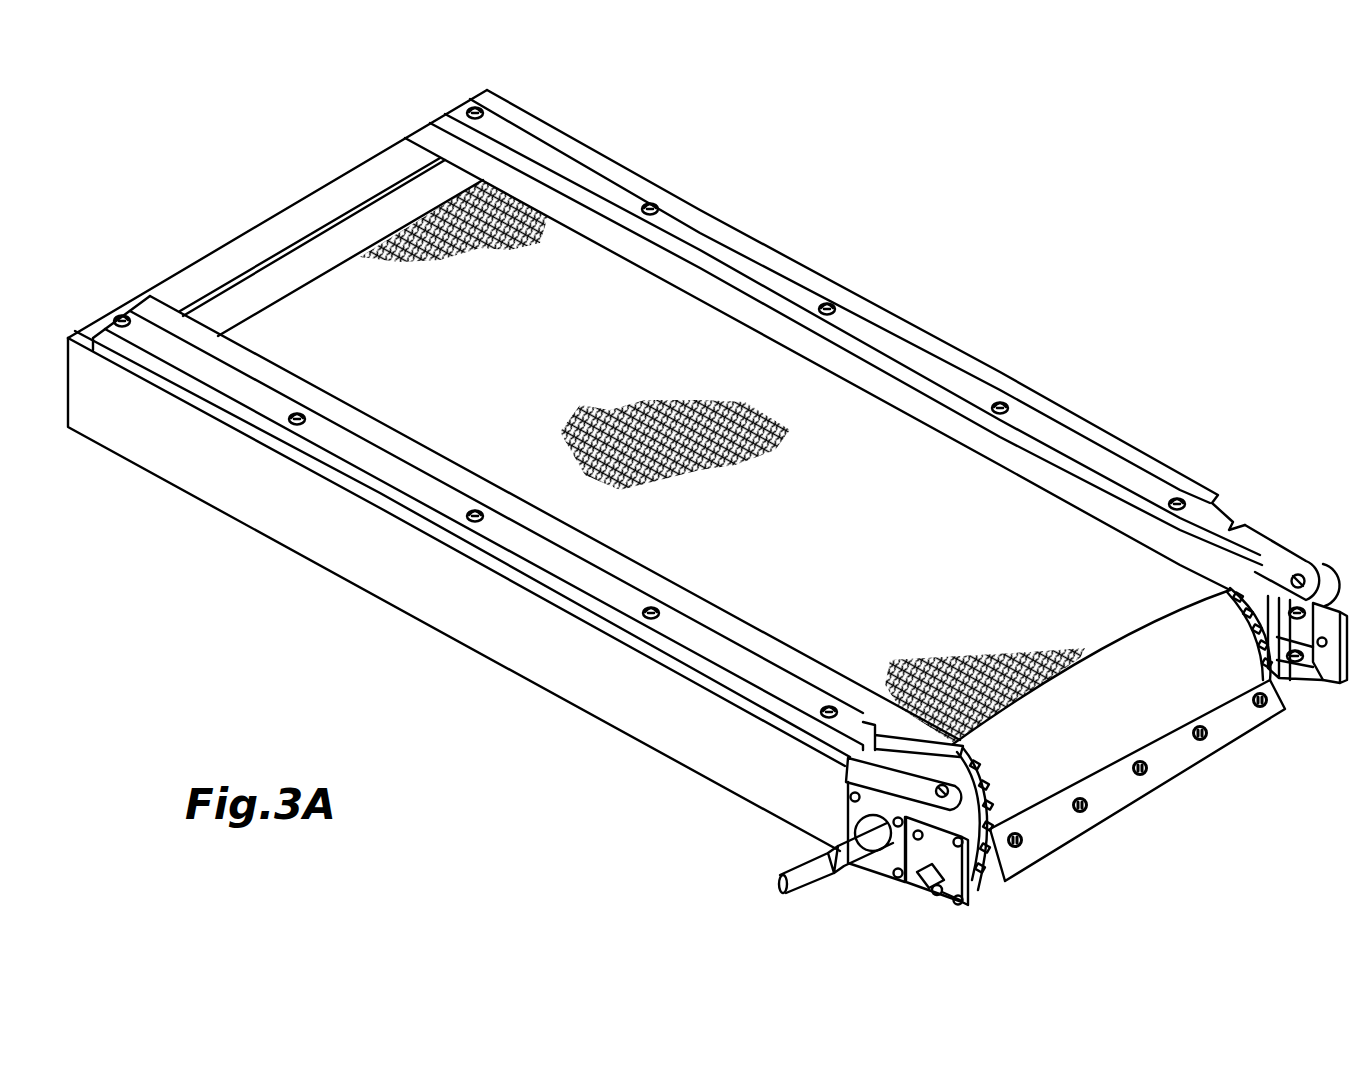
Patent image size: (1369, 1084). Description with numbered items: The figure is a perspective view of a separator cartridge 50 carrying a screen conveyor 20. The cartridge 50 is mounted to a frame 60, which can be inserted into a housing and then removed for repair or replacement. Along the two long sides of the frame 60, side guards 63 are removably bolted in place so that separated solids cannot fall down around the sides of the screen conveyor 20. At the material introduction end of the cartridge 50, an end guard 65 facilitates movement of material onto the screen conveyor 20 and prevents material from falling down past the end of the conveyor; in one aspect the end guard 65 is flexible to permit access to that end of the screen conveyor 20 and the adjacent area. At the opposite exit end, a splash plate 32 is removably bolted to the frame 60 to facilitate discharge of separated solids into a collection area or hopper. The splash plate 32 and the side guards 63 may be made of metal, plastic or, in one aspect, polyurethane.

The screen conveyor 20 is at (682, 430).
The splash plate 32 is at (1122, 699).
The cartridge 50 is at (428, 652).
The frame 60 is at (615, 695).
The side guards 63 is at (865, 362).
The end guard 65 is at (308, 257).